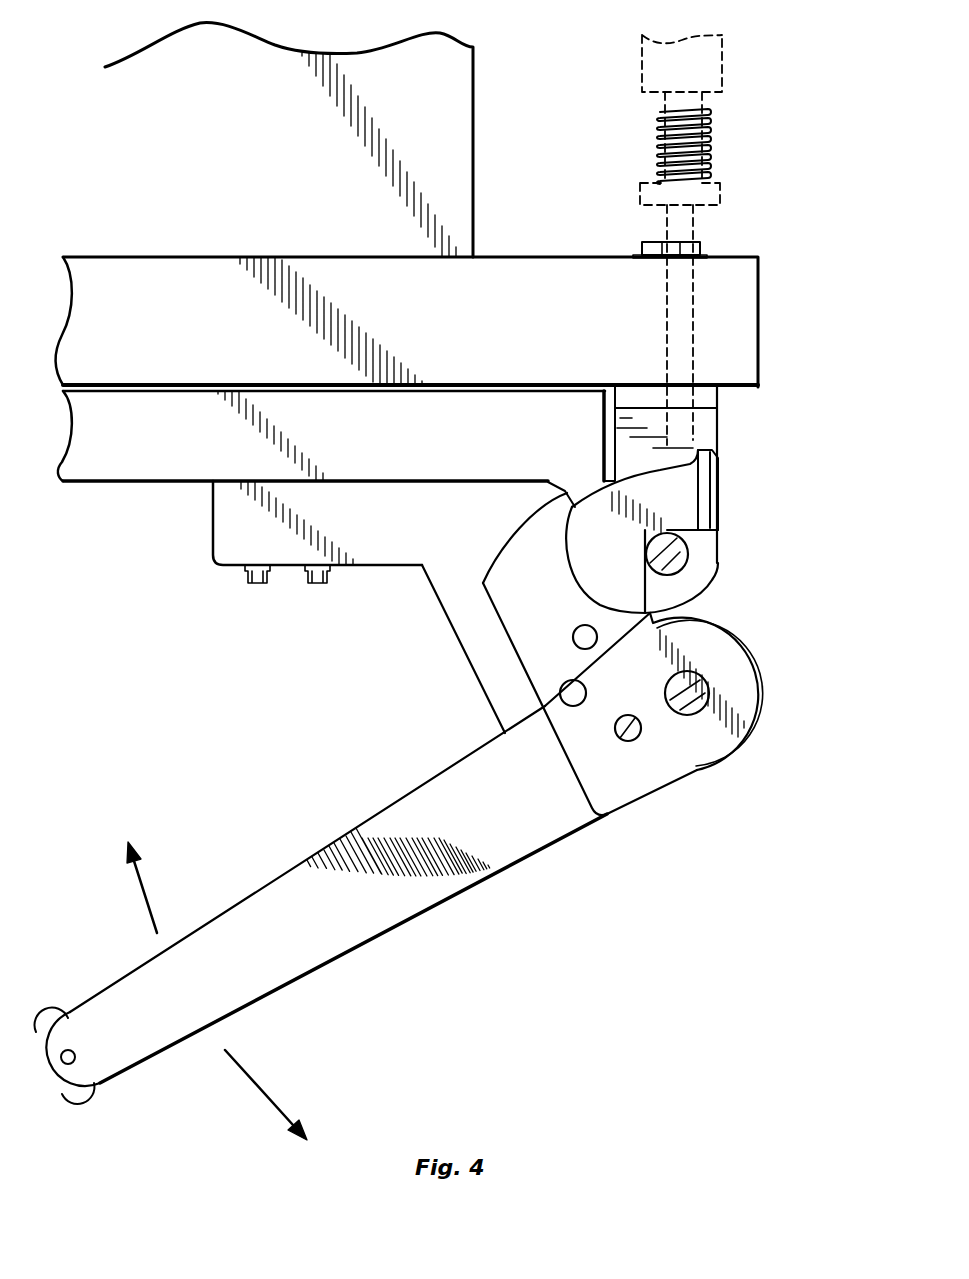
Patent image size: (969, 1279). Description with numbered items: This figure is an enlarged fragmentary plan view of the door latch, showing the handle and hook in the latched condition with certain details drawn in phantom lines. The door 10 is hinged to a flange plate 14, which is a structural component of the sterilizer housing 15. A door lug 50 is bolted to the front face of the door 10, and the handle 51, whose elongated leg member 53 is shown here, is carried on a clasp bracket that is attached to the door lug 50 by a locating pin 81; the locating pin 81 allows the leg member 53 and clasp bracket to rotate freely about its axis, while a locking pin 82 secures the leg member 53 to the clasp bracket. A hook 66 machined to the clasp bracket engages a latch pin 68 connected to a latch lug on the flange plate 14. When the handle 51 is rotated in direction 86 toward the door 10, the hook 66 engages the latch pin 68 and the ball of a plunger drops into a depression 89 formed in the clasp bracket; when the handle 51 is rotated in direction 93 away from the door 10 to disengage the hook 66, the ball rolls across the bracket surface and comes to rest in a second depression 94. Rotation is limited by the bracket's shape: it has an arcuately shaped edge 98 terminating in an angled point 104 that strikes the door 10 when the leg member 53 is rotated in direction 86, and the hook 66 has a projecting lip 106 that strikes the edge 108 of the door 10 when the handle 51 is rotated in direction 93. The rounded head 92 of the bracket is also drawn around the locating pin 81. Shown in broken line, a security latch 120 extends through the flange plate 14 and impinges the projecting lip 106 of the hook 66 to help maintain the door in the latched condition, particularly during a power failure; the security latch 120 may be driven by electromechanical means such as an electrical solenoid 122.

The door 10 is at (140, 450).
The flange plate 14 is at (527, 283).
The sterilizer housing 15 is at (458, 135).
The door lug 50 is at (233, 543).
The handle 51 is at (515, 840).
The leg member 53 is at (283, 910).
The hook 66 is at (687, 507).
The latch pin 68 is at (677, 563).
The locating pin 81 is at (693, 700).
The locking pin 82 is at (637, 737).
The direction 86 is at (143, 898).
The depression 89 is at (597, 635).
The rounded head 92 is at (733, 678).
The direction 93 is at (260, 1090).
The second depression 94 is at (573, 693).
The arcuately shaped edge 98 is at (500, 546).
The angled point 104 is at (565, 491).
The projecting lip 106 is at (693, 458).
The edge 108 is at (602, 458).
The security latch 120 is at (693, 313).
The electrical solenoid 122 is at (720, 137).